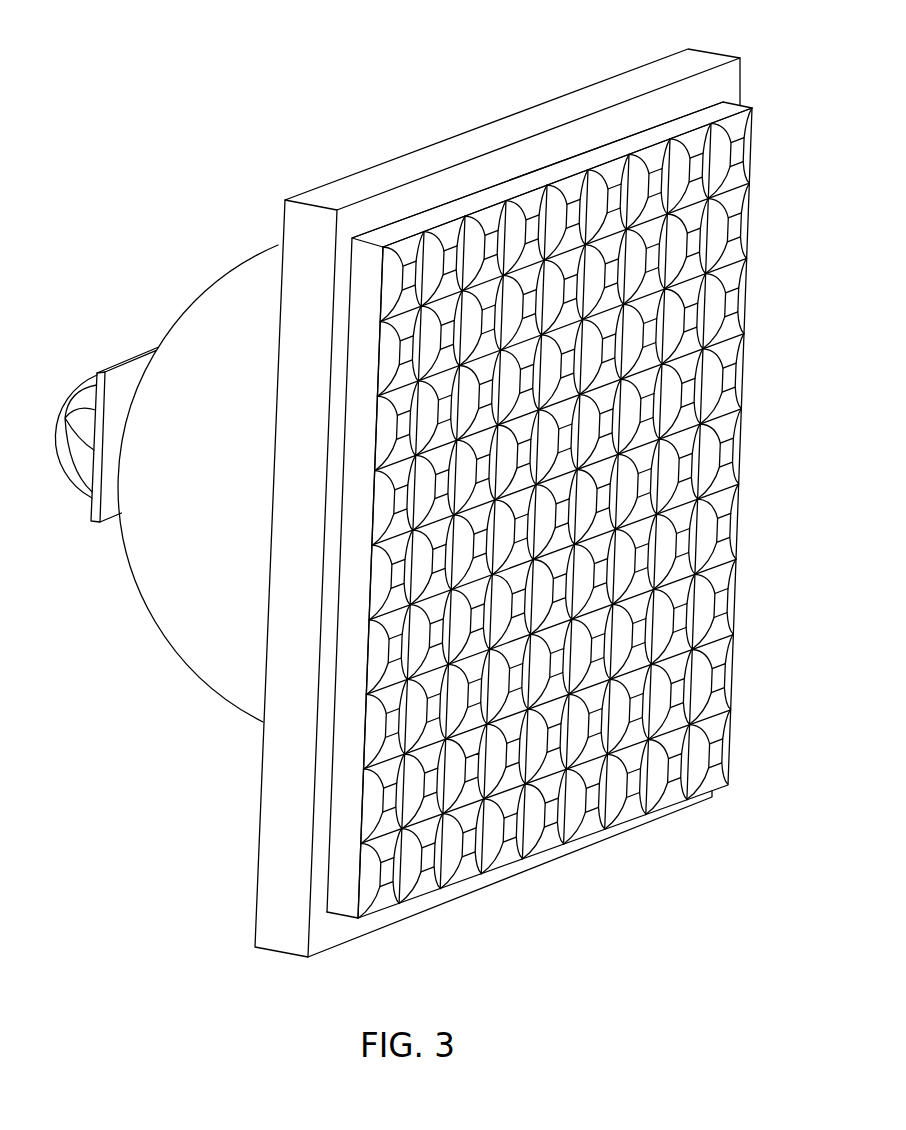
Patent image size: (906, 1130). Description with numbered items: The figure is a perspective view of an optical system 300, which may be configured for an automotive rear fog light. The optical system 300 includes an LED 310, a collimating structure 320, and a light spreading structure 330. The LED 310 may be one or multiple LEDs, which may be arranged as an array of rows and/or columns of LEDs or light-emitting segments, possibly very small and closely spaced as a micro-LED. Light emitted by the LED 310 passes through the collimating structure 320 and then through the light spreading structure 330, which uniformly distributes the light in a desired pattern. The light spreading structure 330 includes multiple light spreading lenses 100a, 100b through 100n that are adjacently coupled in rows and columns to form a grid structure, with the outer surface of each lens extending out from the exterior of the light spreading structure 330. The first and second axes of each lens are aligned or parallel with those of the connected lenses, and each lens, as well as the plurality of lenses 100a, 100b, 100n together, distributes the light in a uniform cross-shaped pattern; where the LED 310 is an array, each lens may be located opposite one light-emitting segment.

The optical system 300 is at (197, 146).
The LED 310 is at (113, 367).
The collimating structure 320 is at (210, 317).
The light spreading structure 330 is at (702, 63).
The light spreading lens 100a is at (410, 253).
The light spreading lens 100b is at (457, 238).
The light spreading lens 100n is at (713, 775).